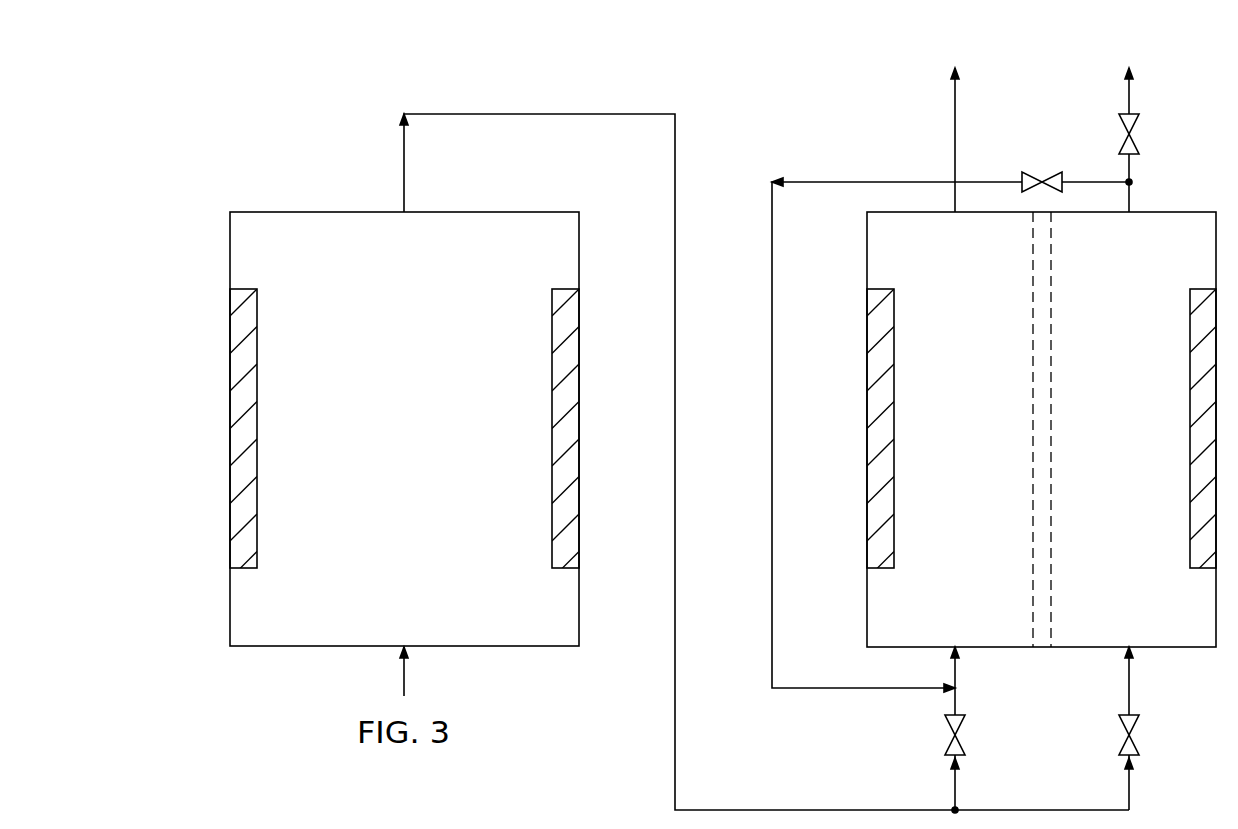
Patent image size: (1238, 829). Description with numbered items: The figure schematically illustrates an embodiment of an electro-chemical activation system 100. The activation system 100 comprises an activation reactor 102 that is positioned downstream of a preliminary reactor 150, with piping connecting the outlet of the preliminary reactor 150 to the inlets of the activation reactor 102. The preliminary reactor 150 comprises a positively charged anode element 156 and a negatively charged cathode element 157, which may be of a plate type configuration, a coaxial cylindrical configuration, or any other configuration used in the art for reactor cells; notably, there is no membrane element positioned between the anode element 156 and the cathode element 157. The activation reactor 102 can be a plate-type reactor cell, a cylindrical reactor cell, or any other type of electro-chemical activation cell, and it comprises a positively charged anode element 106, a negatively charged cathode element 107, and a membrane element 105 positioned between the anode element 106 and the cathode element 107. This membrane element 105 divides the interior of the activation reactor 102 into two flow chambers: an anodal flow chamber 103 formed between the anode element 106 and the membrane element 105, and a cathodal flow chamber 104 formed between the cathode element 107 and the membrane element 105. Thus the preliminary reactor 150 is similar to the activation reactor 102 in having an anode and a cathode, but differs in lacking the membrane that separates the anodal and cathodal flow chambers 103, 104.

The electro-chemical activation system 100 is at (323, 93).
The preliminary reactor 150 is at (274, 212).
The anode element 156 is at (252, 360).
The cathode element 157 is at (558, 497).
The activation reactor 102 is at (1172, 211).
The anodal flow chamber 103 is at (980, 442).
The cathodal flow chamber 104 is at (1138, 442).
The membrane element 105 is at (1051, 548).
The anode element 106 is at (889, 359).
The cathode element 107 is at (1195, 498).